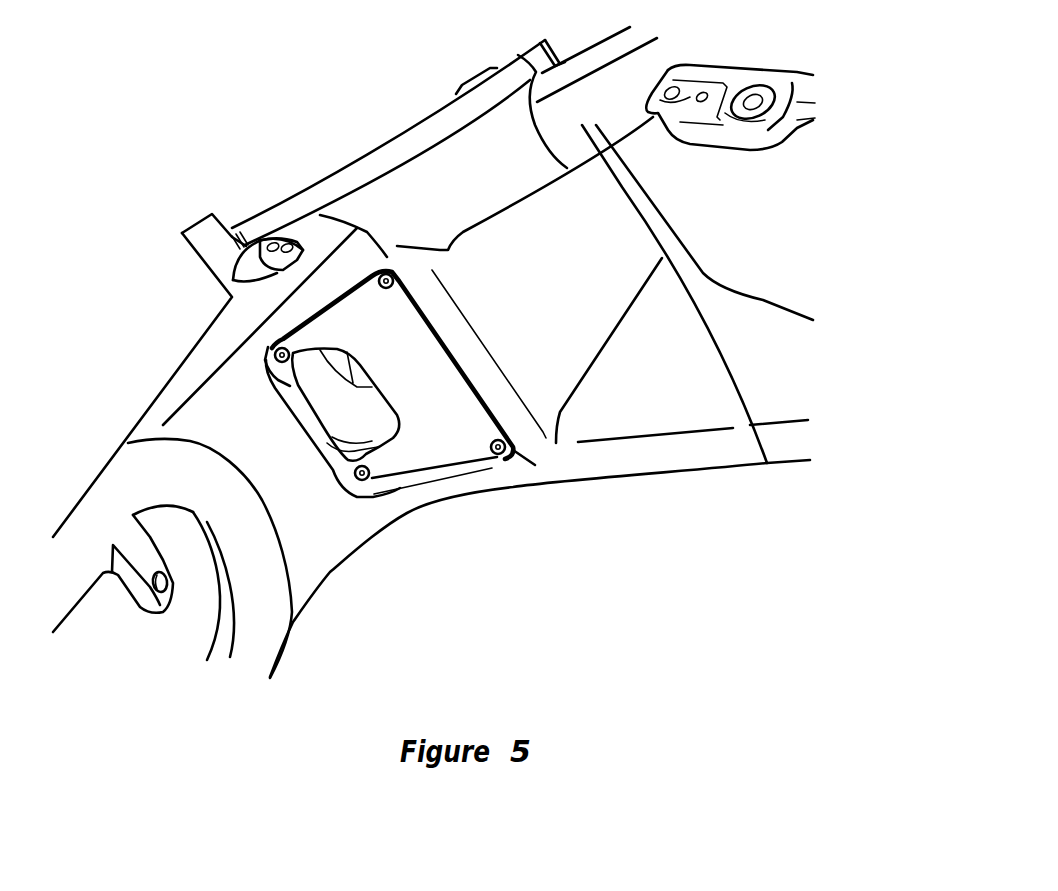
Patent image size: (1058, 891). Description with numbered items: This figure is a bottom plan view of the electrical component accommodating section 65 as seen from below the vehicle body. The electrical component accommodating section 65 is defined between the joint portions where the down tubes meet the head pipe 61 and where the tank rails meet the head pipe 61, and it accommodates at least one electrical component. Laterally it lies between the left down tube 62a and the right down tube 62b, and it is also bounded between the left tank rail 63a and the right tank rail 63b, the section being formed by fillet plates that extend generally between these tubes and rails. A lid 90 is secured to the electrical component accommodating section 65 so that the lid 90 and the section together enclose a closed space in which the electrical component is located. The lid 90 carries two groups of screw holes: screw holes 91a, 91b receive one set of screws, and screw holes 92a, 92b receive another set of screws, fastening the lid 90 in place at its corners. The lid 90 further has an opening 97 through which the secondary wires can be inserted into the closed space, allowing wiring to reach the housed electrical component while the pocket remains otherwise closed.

The head pipe 61 is at (337, 190).
The left down tube 62a is at (110, 497).
The right down tube 62b is at (260, 637).
The left tank rail 63a is at (622, 122).
The right tank rail 63b is at (783, 450).
The electrical component accommodating section 65 is at (310, 247).
The lid 90 is at (447, 447).
The screw hole 91a is at (280, 341).
The screw hole 91b is at (362, 482).
The screw hole 92a is at (392, 273).
The screw hole 92b is at (497, 455).
The opening 97 is at (357, 388).